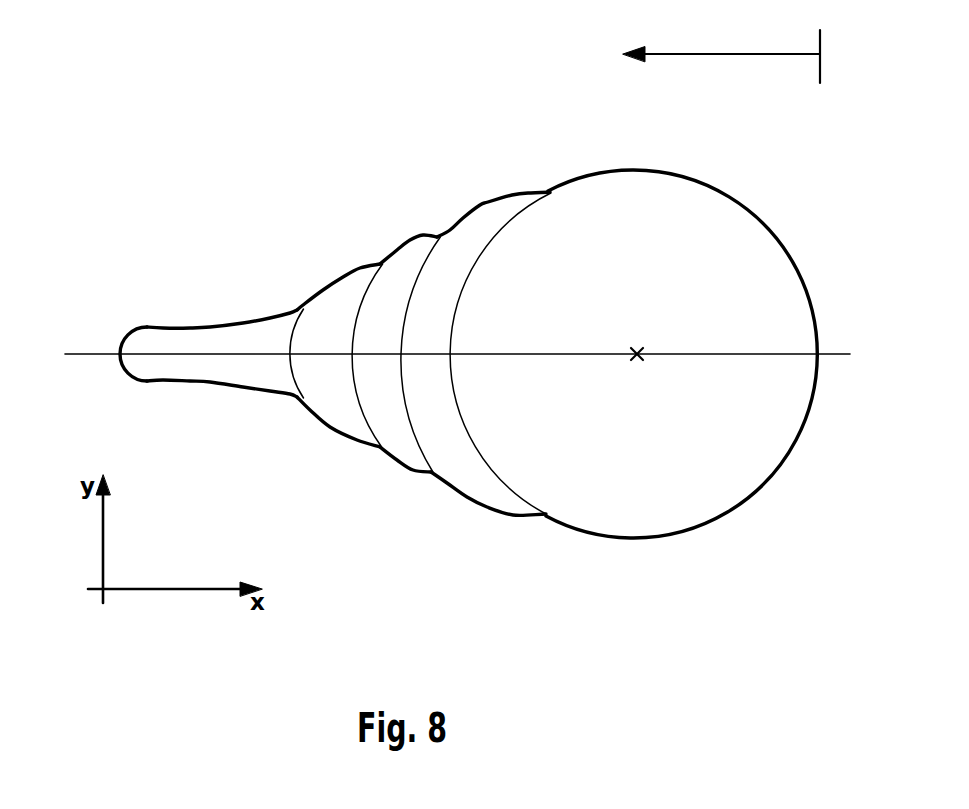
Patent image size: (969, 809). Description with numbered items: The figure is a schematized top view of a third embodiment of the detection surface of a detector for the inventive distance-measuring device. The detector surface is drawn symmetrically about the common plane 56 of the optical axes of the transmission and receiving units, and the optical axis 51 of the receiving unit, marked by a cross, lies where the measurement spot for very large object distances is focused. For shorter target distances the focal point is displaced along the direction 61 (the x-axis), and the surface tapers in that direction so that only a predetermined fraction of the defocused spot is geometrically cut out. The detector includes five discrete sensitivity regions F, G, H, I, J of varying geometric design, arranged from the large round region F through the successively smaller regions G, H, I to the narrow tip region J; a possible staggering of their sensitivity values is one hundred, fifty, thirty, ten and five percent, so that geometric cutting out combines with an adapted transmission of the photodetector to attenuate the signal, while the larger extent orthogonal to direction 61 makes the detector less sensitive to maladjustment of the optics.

The optical axis of the receiving unit 51 is at (650, 348).
The common plane of the optical axes 56 is at (92, 352).
The direction of displacement 61 is at (721, 53).
The sensitivity region F is at (725, 222).
The sensitivity region G is at (483, 222).
The sensitivity region H is at (410, 258).
The sensitivity region I is at (338, 300).
The sensitivity region J is at (207, 342).